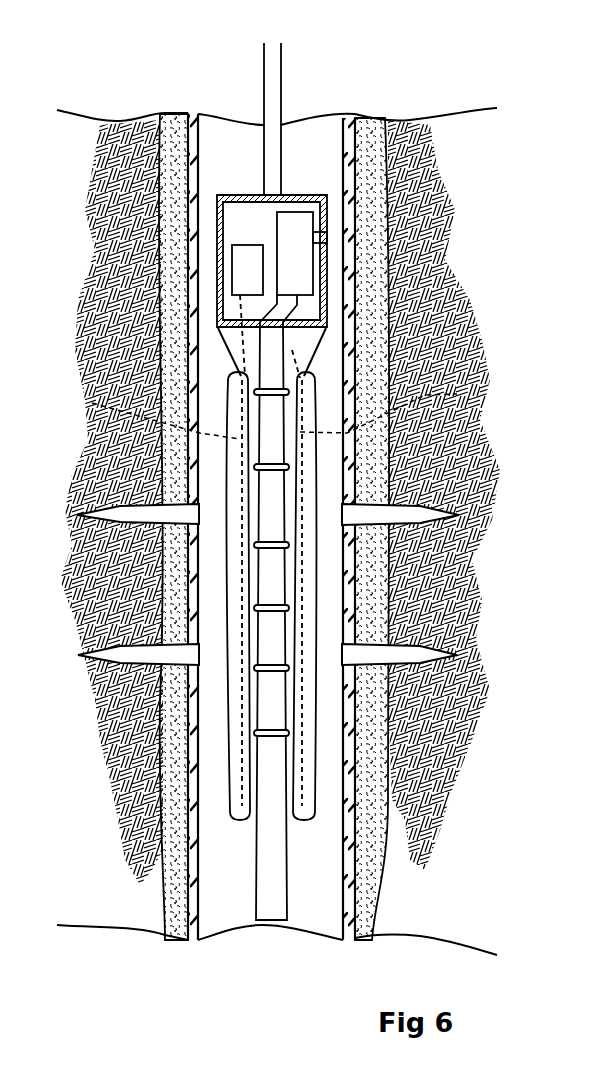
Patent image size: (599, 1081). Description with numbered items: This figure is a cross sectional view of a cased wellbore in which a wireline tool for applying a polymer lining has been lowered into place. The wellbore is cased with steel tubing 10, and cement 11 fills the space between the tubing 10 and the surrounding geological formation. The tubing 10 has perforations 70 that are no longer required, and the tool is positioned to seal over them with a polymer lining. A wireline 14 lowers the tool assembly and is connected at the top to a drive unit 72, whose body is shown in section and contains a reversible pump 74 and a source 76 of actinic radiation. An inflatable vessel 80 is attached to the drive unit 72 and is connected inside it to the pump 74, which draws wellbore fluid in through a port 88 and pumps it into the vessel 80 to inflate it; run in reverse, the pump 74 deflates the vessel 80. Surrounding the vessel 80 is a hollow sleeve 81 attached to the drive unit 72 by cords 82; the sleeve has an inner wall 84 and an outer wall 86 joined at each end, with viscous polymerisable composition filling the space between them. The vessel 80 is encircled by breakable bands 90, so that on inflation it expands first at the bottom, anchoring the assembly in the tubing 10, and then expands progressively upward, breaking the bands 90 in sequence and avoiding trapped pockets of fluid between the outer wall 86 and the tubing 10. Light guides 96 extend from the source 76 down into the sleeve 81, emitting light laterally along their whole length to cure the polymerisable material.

The steel tubing 10 is at (350, 143).
The cement 11 is at (370, 185).
The wireline 14 is at (273, 75).
The perforations 70 is at (407, 512).
The drive unit 72 is at (328, 296).
The reversible pump 74 is at (296, 270).
The source of actinic radiation 76 is at (243, 272).
The inflatable vessel 80 is at (272, 900).
The hollow sleeve 81 is at (322, 793).
The cords 82 is at (310, 355).
The inner wall 84 is at (293, 743).
The outer wall 86 is at (318, 765).
The port 88 is at (325, 238).
The breakable bands 90 is at (288, 607).
The light guides 96 is at (274, 410).